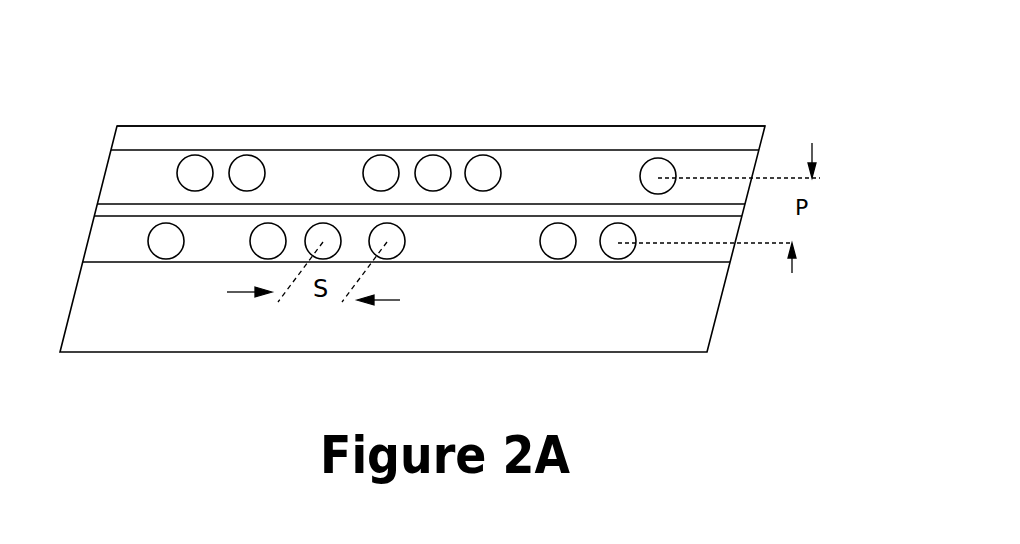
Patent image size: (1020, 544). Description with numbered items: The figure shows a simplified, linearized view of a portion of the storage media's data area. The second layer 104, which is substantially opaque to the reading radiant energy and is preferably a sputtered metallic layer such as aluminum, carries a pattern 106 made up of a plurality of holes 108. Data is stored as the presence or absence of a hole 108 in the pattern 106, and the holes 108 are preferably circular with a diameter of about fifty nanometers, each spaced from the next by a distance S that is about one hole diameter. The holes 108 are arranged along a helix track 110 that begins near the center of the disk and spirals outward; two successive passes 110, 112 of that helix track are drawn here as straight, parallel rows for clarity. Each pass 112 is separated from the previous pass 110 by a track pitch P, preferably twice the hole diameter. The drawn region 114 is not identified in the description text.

The second layer 104 is at (577, 138).
The pattern 106 is at (387, 122).
The holes 108 is at (487, 173).
The helix track 110 is at (338, 177).
The second pass of the helix track 112 is at (472, 237).
The intermediate region 114 is at (603, 173).